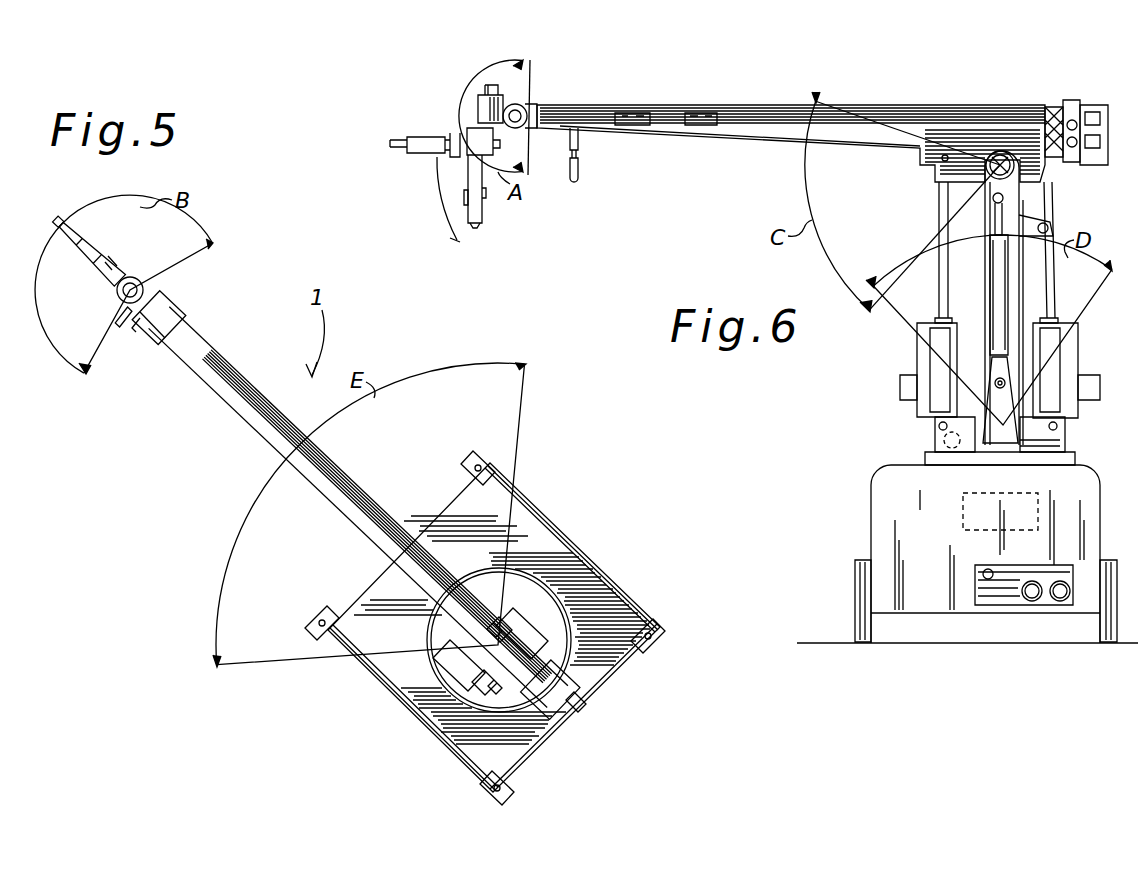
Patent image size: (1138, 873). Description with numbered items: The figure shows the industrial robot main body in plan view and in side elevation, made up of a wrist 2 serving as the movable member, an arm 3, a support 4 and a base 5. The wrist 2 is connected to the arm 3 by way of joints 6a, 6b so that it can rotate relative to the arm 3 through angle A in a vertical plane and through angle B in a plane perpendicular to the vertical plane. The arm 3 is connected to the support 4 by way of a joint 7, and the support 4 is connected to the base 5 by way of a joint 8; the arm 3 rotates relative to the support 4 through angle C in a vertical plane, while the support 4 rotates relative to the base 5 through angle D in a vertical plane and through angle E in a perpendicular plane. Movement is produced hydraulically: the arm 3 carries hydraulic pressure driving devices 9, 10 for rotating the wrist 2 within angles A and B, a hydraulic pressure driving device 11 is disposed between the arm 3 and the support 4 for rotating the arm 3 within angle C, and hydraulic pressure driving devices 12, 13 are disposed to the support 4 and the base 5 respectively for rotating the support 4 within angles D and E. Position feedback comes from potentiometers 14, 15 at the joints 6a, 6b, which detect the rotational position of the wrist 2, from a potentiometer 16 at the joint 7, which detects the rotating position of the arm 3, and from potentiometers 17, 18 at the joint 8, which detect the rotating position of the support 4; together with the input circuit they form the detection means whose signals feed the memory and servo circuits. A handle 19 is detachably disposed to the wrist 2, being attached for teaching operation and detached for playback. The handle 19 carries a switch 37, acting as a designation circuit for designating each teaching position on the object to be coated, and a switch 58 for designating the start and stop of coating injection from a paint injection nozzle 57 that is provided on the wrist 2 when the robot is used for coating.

In FIG. 5, the wrist 2 is at (133, 280).
In FIG. 6, the wrist 2 is at (480, 140).
In FIG. 5, the arm 3 is at (365, 500).
In FIG. 6, the arm 3 is at (740, 108).
In FIG. 5, the support 4 is at (515, 655).
In FIG. 6, the support 4 is at (985, 285).
In FIG. 5, the base 5 is at (578, 582).
In FIG. 6, the base 5 is at (900, 490).
In FIG. 6, the joint 6a is at (530, 110).
In FIG. 6, the joint 6b is at (490, 102).
In FIG. 6, the joint 7 is at (990, 160).
In FIG. 6, the joint 8 is at (1066, 426).
In FIG. 6, the hydraulic pressure driving device 9 is at (640, 130).
In FIG. 6, the hydraulic pressure driving device 10 is at (698, 130).
In FIG. 6, the hydraulic pressure driving device 11 is at (912, 370).
In FIG. 6, the hydraulic pressure driving device 12 is at (1068, 364).
In FIG. 6, the hydraulic pressure driving device 13 is at (1040, 505).
In FIG. 6, the potentiometer 14 is at (528, 128).
In FIG. 5, the potentiometer 15 is at (118, 293).
In FIG. 6, the potentiometer 15 is at (492, 85).
In FIG. 6, the potentiometer 16 is at (1003, 152).
In FIG. 6, the potentiometer 17 is at (942, 435).
In FIG. 6, the potentiometer 18 is at (1055, 445).
In FIG. 6, the handle 19 is at (478, 228).
In FIG. 6, the switch 37 is at (440, 196).
In FIG. 6, the paint injection nozzle 57 is at (405, 142).
In FIG. 6, the switch 58 is at (483, 200).